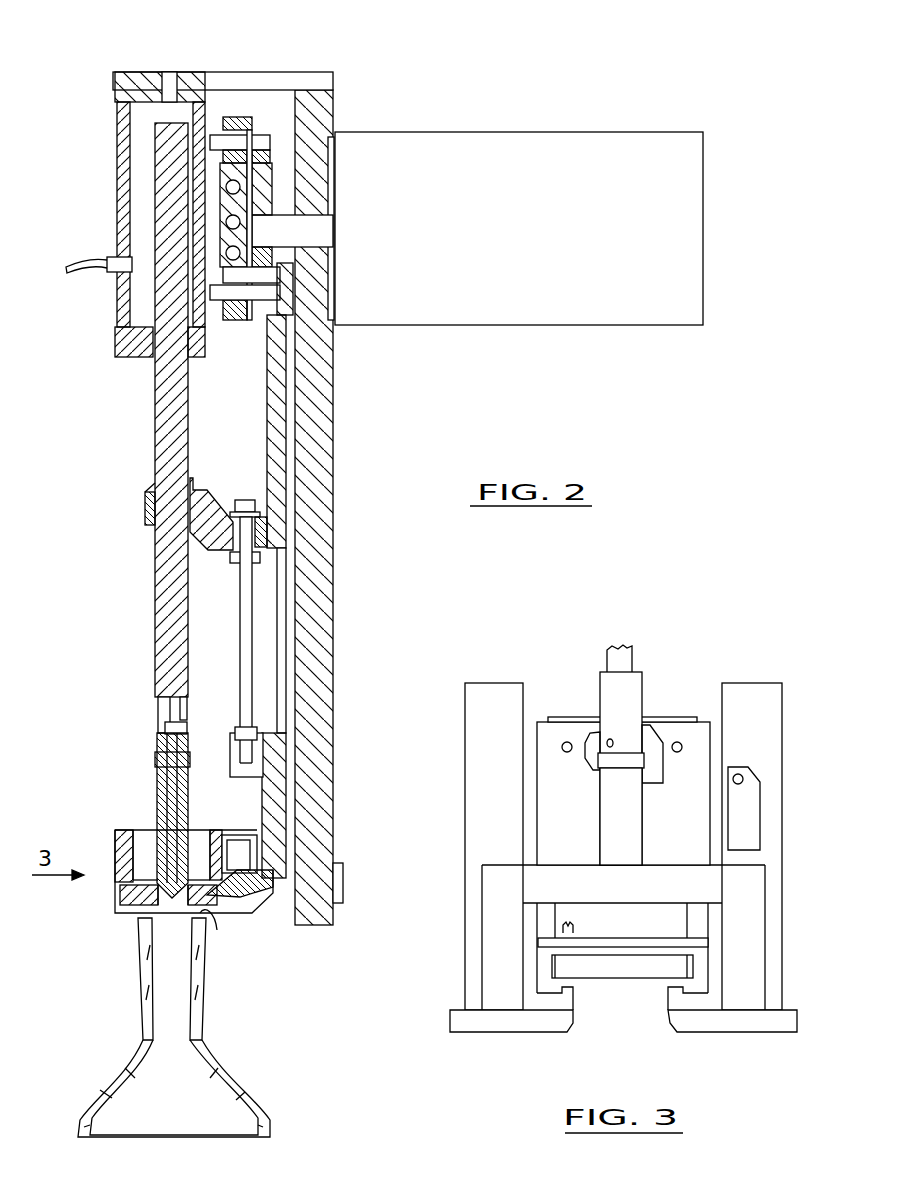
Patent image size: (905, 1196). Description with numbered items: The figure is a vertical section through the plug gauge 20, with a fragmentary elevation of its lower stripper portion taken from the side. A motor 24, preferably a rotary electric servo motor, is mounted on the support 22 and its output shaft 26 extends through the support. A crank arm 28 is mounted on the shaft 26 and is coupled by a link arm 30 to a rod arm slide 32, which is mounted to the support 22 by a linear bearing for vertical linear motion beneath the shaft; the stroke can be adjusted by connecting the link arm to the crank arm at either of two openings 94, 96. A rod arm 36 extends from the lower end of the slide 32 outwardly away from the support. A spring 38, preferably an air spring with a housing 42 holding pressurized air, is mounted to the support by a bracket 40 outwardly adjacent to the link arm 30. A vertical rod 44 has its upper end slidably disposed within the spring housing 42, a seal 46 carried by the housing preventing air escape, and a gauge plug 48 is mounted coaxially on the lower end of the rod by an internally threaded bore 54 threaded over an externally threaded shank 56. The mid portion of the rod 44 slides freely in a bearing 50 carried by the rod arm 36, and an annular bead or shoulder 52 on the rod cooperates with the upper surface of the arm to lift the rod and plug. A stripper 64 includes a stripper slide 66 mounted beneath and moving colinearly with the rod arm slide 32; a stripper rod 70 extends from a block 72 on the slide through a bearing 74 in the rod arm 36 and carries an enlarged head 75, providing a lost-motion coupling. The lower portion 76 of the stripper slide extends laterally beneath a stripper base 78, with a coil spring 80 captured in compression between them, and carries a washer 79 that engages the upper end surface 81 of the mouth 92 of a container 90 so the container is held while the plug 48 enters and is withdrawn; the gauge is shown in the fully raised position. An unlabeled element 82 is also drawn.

In FIG. 2, the plug gauge 20 is at (562, 59).
In FIG. 2, the support 22 is at (327, 97).
In FIG. 2, the motor 24 is at (593, 137).
In FIG. 2, the output shaft 26 is at (316, 231).
In FIG. 2, the crank arm 28 is at (262, 160).
In FIG. 2, the link arm 30 is at (236, 117).
In FIG. 2, the rod arm slide 32 is at (272, 402).
In FIG. 2, the rod arm 36 is at (208, 550).
In FIG. 2, the spring 38 is at (110, 136).
In FIG. 2, the bracket 40 is at (316, 72).
In FIG. 2, the spring housing 42 is at (124, 176).
In FIG. 2, the vertical rod 44 is at (157, 403).
In FIG. 3, the vertical rod 44 is at (633, 692).
In FIG. 2, the seal 46 is at (148, 333).
In FIG. 2, the gauge plug 48 is at (160, 782).
In FIG. 3, the gauge plug 48 is at (634, 812).
In FIG. 2, the bearing 50 is at (144, 505).
In FIG. 2, the annular bead or shoulder 52 is at (155, 483).
In FIG. 2, the internally threaded bore 54 is at (168, 726).
In FIG. 2, the externally threaded shank 56 is at (168, 708).
In FIG. 2, the stripper 64 is at (100, 830).
In FIG. 3, the stripper 64 is at (520, 1076).
In FIG. 2, the stripper slide 66 is at (278, 800).
In FIG. 3, the stripper slide 66 is at (698, 830).
In FIG. 2, the stripper rod 70 is at (241, 630).
In FIG. 3, the stripper rod 70 is at (623, 654).
In FIG. 2, the block 72 is at (230, 768).
In FIG. 3, the block 72 is at (656, 744).
In FIG. 2, the bearing 74 is at (258, 513).
In FIG. 2, the head 75 is at (241, 500).
In FIG. 2, the lower portion of stripper slide 76 is at (120, 887).
In FIG. 3, the lower portion of stripper slide 76 is at (700, 967).
In FIG. 3, the stripper base 78 is at (490, 929).
In FIG. 2, the washer 79 is at (120, 912).
In FIG. 3, the washer 79 is at (640, 968).
In FIG. 2, the coil spring 80 is at (272, 893).
In FIG. 2, the upper end surface 81 is at (217, 930).
In FIG. 2, the lever 82 is at (110, 257).
In FIG. 2, the container 90 is at (101, 1092).
In FIG. 2, the container mouth 92 is at (140, 953).
In FIG. 2, the opening 94 is at (266, 136).
In FIG. 2, the opening 96 is at (262, 167).